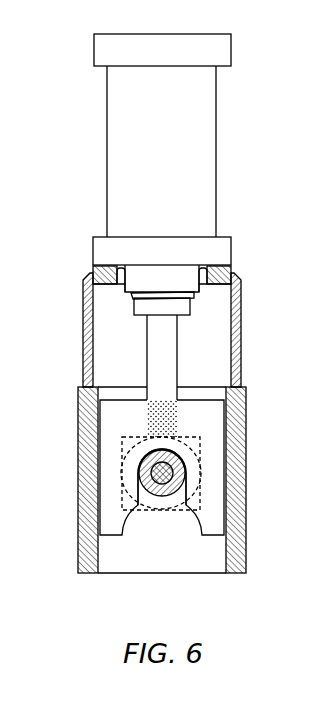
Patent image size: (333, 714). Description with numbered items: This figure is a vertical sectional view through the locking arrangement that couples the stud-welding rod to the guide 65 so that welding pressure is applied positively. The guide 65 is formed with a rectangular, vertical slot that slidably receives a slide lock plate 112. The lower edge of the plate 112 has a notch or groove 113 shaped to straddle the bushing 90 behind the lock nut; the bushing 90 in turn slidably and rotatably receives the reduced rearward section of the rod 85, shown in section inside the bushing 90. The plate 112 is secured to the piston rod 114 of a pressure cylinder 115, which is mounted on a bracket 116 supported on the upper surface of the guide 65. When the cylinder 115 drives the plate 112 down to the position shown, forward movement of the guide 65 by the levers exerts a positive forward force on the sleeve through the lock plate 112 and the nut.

The pressure cylinder 115 is at (199, 148).
The bracket 116 is at (241, 304).
The piston rod 114 is at (177, 354).
The guide 65 is at (237, 533).
The slide lock plate 112 is at (205, 495).
The rod 85 is at (175, 462).
The notch or groove 113 is at (173, 510).
The bushing 90 is at (137, 486).